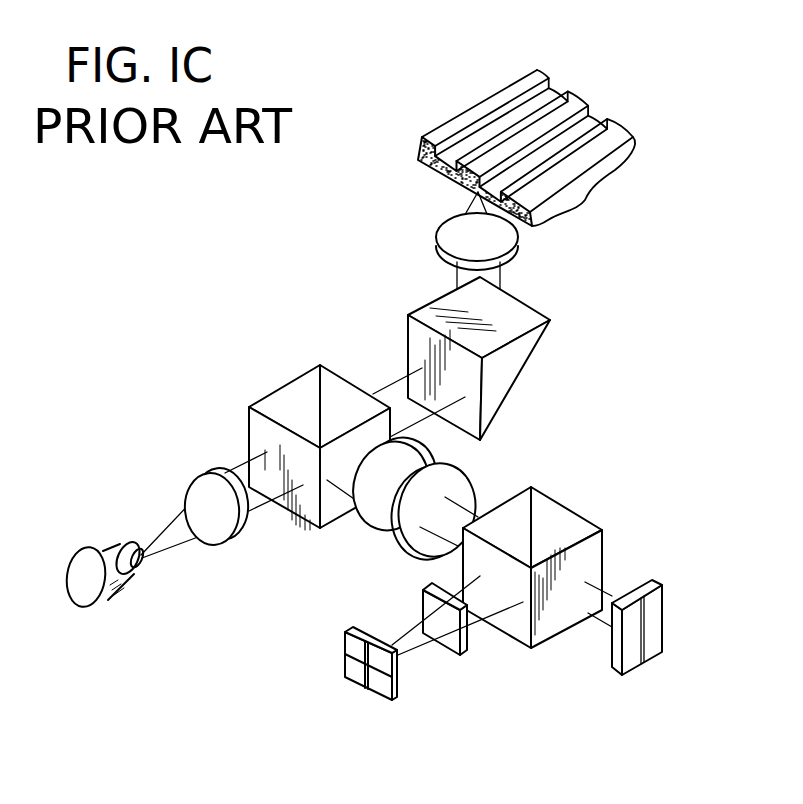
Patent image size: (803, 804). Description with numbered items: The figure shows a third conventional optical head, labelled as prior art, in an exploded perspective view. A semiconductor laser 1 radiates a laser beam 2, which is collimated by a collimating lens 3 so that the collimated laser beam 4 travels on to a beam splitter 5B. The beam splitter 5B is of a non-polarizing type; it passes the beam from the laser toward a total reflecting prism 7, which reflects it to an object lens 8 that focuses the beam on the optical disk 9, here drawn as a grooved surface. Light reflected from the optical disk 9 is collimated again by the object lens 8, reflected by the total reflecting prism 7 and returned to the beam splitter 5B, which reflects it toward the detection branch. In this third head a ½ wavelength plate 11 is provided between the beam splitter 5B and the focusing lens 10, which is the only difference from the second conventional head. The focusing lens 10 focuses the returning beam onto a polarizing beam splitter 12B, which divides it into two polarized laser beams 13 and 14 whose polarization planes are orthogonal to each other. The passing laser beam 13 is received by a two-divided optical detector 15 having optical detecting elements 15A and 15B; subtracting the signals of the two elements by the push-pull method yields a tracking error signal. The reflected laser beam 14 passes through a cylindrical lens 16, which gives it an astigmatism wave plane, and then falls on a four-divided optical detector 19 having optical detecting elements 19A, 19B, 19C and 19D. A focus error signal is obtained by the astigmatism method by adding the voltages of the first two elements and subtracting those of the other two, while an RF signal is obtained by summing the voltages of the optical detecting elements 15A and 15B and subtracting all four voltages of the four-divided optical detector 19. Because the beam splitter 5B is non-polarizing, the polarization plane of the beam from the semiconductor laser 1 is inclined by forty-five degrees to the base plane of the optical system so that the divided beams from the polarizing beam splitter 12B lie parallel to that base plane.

The semiconductor laser 1 is at (93, 600).
The laser beam 2 is at (157, 532).
The collimating lens 3 is at (213, 543).
The laser beam 4 is at (232, 463).
The beam splitter 5B is at (285, 405).
The total reflecting prism 7 is at (500, 378).
The object lens 8 is at (518, 254).
The optical disk 9 is at (437, 136).
The focusing lens 10 is at (453, 483).
The ½ wavelength plate 11 is at (367, 522).
The polarizing beam splitter 12B is at (557, 522).
The laser beam 13 is at (679, 635).
The laser beam 14 is at (512, 607).
The two-divided optical detector 15 is at (679, 665).
The optical detecting element 15A is at (630, 660).
The optical detecting element 15B is at (650, 657).
The cylindrical lens 16 is at (467, 653).
The four-divided optical detector 19 is at (360, 709).
The optical detecting element 19A is at (355, 647).
The optical detecting element 19B is at (355, 678).
The optical detecting element 19C is at (378, 688).
The optical detecting element 19D is at (383, 667).